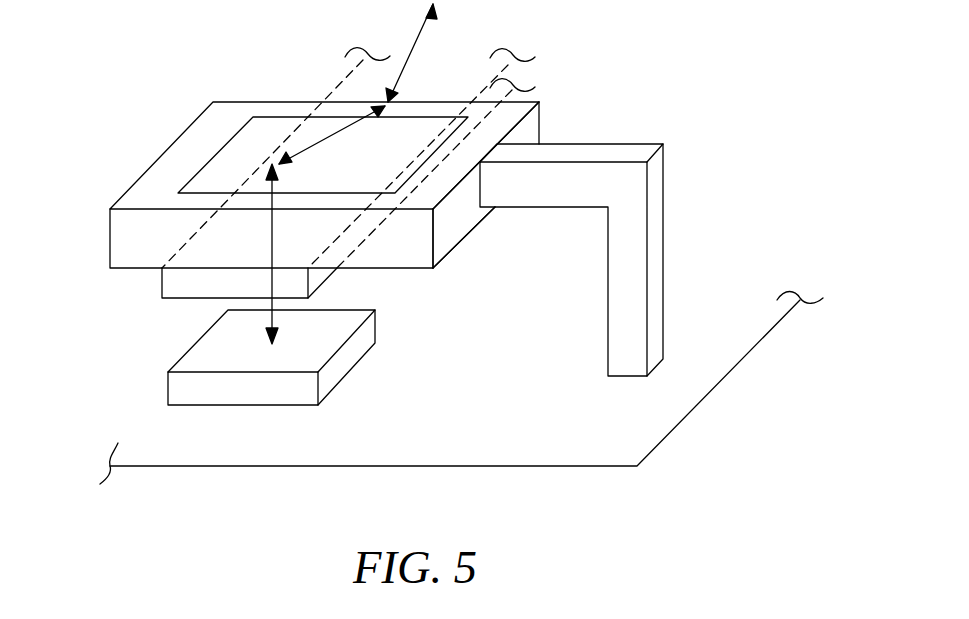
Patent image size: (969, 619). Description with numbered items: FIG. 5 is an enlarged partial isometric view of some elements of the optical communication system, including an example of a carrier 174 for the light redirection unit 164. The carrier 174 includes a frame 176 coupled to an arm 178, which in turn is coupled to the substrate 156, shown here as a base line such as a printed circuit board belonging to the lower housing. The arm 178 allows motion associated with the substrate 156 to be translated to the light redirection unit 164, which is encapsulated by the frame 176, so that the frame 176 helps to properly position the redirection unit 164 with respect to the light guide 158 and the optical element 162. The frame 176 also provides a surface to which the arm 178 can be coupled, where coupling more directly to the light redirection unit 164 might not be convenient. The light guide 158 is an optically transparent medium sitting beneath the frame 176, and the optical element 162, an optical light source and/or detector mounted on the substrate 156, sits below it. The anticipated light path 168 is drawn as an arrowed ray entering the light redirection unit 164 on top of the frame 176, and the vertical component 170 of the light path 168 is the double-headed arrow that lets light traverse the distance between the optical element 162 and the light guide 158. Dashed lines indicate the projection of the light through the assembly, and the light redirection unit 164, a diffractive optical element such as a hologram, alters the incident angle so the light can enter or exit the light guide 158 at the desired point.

The substrate 156 is at (511, 457).
The light guide 158 is at (165, 286).
The optical element 162 is at (247, 397).
The light redirection unit 164 is at (267, 125).
The light path 168 is at (425, 23).
The vertical component 170 is at (272, 252).
The carrier 174 is at (450, 239).
The frame 176 is at (176, 152).
The arm 178 is at (637, 190).